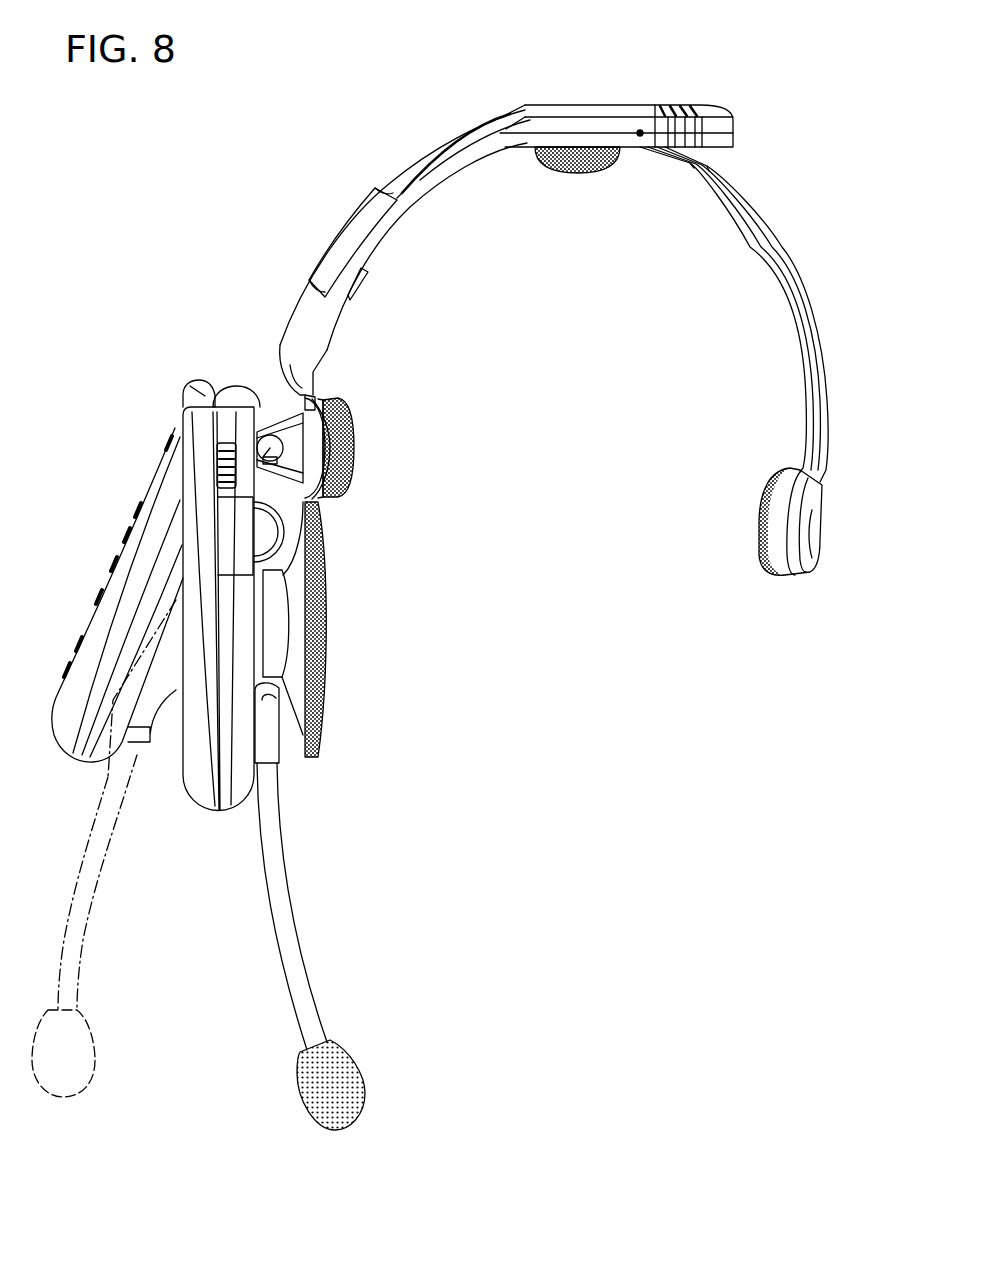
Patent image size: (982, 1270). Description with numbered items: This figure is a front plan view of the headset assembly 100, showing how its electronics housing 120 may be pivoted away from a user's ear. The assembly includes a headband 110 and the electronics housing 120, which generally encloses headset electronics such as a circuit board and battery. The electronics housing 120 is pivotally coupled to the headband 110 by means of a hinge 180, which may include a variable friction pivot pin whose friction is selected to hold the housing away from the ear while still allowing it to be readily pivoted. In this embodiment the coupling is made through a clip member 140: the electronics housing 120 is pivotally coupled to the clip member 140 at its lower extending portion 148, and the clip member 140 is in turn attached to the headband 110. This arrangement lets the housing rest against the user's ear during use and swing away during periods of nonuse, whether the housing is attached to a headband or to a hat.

The headset assembly 100 is at (418, 32).
The headband 110 is at (400, 143).
The electronics housing 120 is at (83, 580).
The clip member 140 is at (428, 203).
The lower portion of clip member 148 is at (288, 433).
The hinge 180 is at (234, 394).